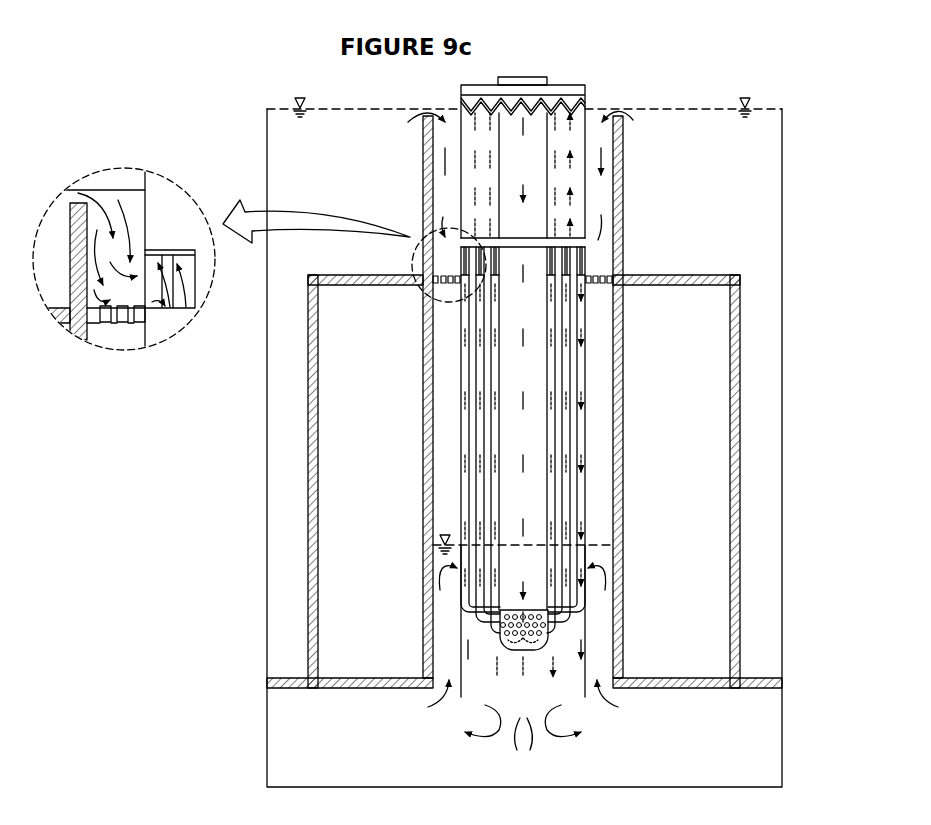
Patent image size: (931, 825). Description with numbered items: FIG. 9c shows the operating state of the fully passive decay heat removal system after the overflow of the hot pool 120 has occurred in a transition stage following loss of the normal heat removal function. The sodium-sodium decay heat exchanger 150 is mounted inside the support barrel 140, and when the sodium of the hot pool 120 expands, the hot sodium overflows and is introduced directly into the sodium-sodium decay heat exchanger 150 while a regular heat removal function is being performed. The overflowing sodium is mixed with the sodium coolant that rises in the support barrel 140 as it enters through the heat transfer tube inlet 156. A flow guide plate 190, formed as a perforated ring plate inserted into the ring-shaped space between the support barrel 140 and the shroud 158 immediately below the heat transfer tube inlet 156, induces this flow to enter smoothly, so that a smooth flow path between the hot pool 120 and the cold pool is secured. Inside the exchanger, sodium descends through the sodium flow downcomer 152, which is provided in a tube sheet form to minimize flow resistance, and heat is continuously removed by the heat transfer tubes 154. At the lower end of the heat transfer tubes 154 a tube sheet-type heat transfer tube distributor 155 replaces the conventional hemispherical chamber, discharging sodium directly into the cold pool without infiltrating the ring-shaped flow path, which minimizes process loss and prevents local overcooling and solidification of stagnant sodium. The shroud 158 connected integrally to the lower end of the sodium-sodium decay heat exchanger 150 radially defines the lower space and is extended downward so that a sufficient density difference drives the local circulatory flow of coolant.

The hot pool 120 is at (310, 150).
The support barrel 140 is at (623, 205).
The sodium-sodium decay heat exchanger 150 is at (588, 92).
The sodium flow downcomer 152 is at (535, 160).
The heat transfer tube 154 is at (565, 633).
The heat transfer tube distributor 155 is at (550, 620).
The heat transfer tube inlet 156 is at (585, 260).
The shroud 158 is at (588, 662).
The flow guide plate 190 is at (405, 262).